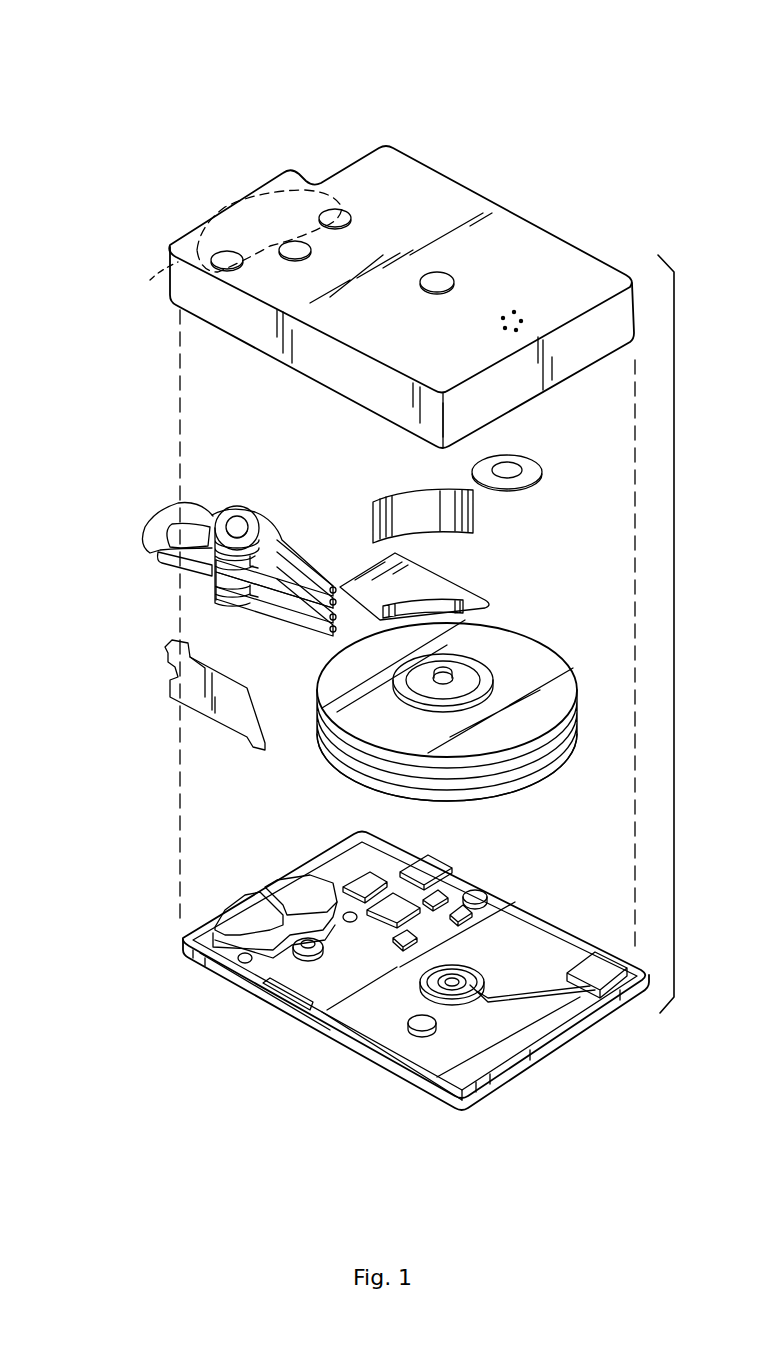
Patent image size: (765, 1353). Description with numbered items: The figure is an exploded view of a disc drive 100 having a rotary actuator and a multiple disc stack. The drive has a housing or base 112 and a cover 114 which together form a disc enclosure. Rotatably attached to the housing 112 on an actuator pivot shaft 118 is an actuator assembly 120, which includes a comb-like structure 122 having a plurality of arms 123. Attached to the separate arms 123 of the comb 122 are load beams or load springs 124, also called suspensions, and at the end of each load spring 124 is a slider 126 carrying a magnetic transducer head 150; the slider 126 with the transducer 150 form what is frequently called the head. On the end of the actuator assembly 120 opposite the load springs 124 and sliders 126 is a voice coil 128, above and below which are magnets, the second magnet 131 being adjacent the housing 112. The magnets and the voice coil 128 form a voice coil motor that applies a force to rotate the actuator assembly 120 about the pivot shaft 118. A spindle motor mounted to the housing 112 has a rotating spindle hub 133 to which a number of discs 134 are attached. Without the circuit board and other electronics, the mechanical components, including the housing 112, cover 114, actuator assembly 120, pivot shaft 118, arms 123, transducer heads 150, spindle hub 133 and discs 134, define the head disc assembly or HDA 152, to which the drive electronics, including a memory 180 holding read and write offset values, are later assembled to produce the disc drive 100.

The disc drive 100 is at (140, 88).
The housing 112 is at (552, 943).
The cover 114 is at (535, 248).
The actuator pivot shaft 118 is at (244, 520).
The actuator assembly 120 is at (200, 565).
The comb-like structure 122 is at (258, 608).
The arms 123 is at (282, 535).
The load springs 124 is at (299, 560).
The slider 126 is at (333, 588).
The voice coil 128 is at (162, 528).
The second magnet 131 is at (237, 908).
The spindle hub 133 is at (450, 675).
The discs 134 is at (552, 660).
The magnetic transducer head 150 is at (352, 585).
The head disc assembly 152 is at (302, 757).
The memory 180 is at (430, 873).